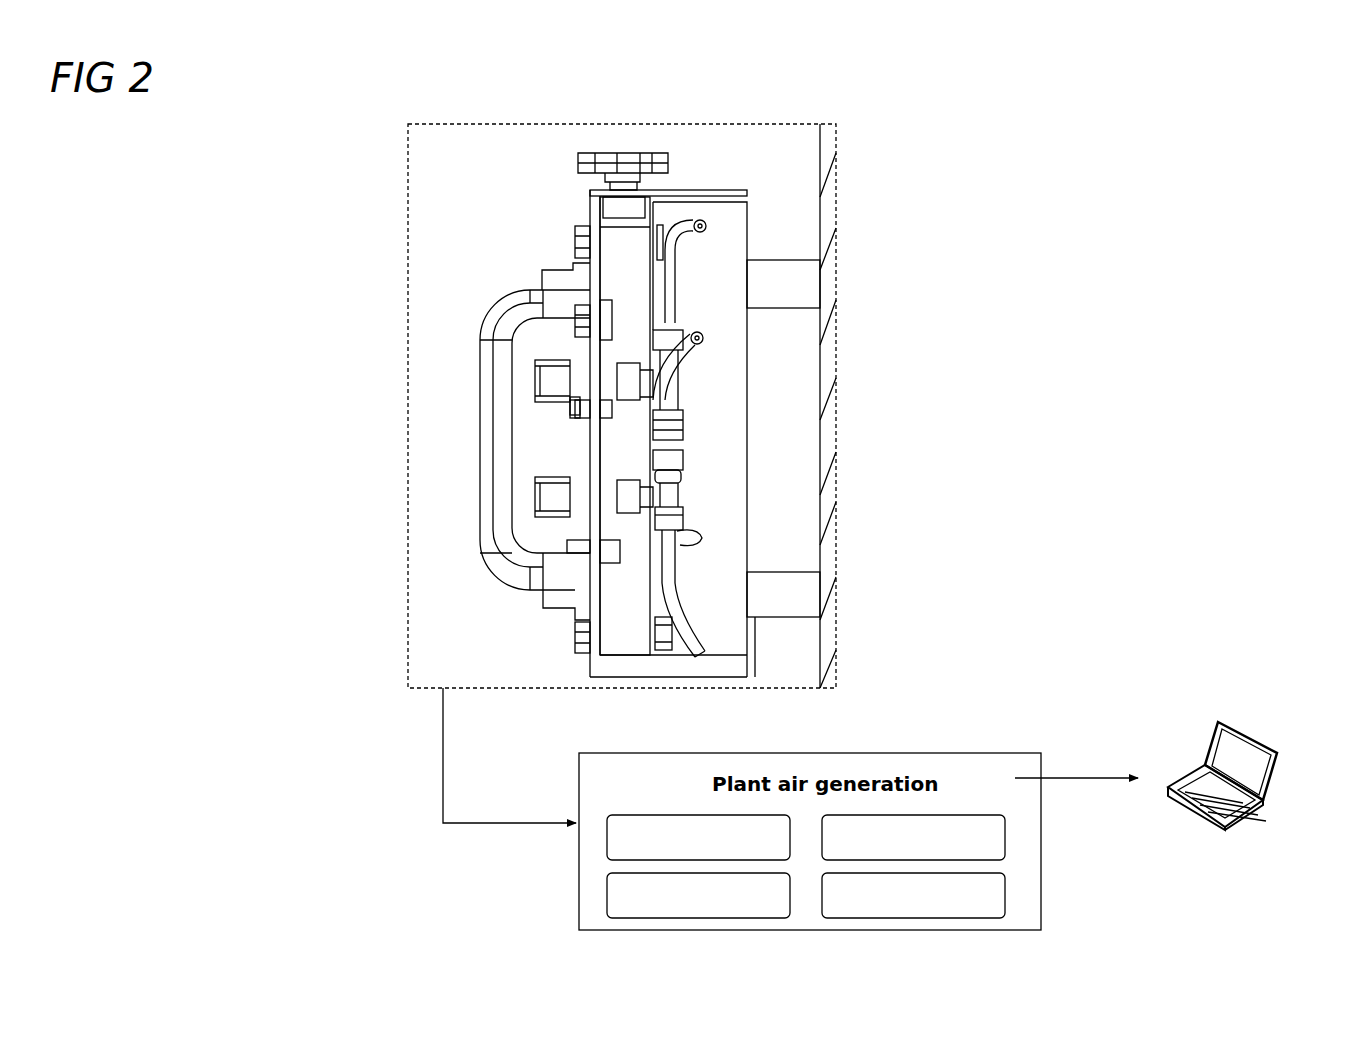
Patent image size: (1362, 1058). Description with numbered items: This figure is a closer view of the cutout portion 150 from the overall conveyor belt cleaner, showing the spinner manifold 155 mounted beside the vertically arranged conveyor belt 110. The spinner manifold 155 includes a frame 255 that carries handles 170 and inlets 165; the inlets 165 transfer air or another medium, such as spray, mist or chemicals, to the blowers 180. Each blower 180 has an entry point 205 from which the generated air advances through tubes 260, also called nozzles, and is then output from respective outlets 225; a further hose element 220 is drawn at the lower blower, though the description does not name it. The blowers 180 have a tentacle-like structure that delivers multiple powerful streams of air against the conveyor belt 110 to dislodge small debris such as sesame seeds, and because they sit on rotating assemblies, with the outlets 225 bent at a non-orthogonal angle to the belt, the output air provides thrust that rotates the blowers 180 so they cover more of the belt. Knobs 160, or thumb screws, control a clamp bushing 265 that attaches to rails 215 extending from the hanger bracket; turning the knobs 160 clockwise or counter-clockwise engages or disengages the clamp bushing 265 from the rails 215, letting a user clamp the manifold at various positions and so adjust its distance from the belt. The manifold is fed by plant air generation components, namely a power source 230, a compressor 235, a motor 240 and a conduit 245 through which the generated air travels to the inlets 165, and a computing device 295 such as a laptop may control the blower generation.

The conveyor belt 110 is at (838, 192).
The cutout portion 150 is at (409, 677).
The spinner manifold 155 is at (445, 233).
The knobs 160 is at (578, 160).
The inlets 165 is at (533, 365).
The handles 170 is at (480, 431).
The blowers 180 is at (693, 490).
The entry point 205 is at (648, 380).
The rails 215 is at (762, 277).
The hose 220 is at (677, 520).
The outlets 225 is at (700, 222).
The power source 230 is at (607, 853).
The compressor 235 is at (607, 900).
The motor 240 is at (1005, 838).
The conduit 245 is at (1005, 893).
The frame 255 is at (580, 437).
The tubes 260 is at (676, 286).
The clamp bushing 265 is at (622, 205).
The computing device 295 is at (1282, 750).